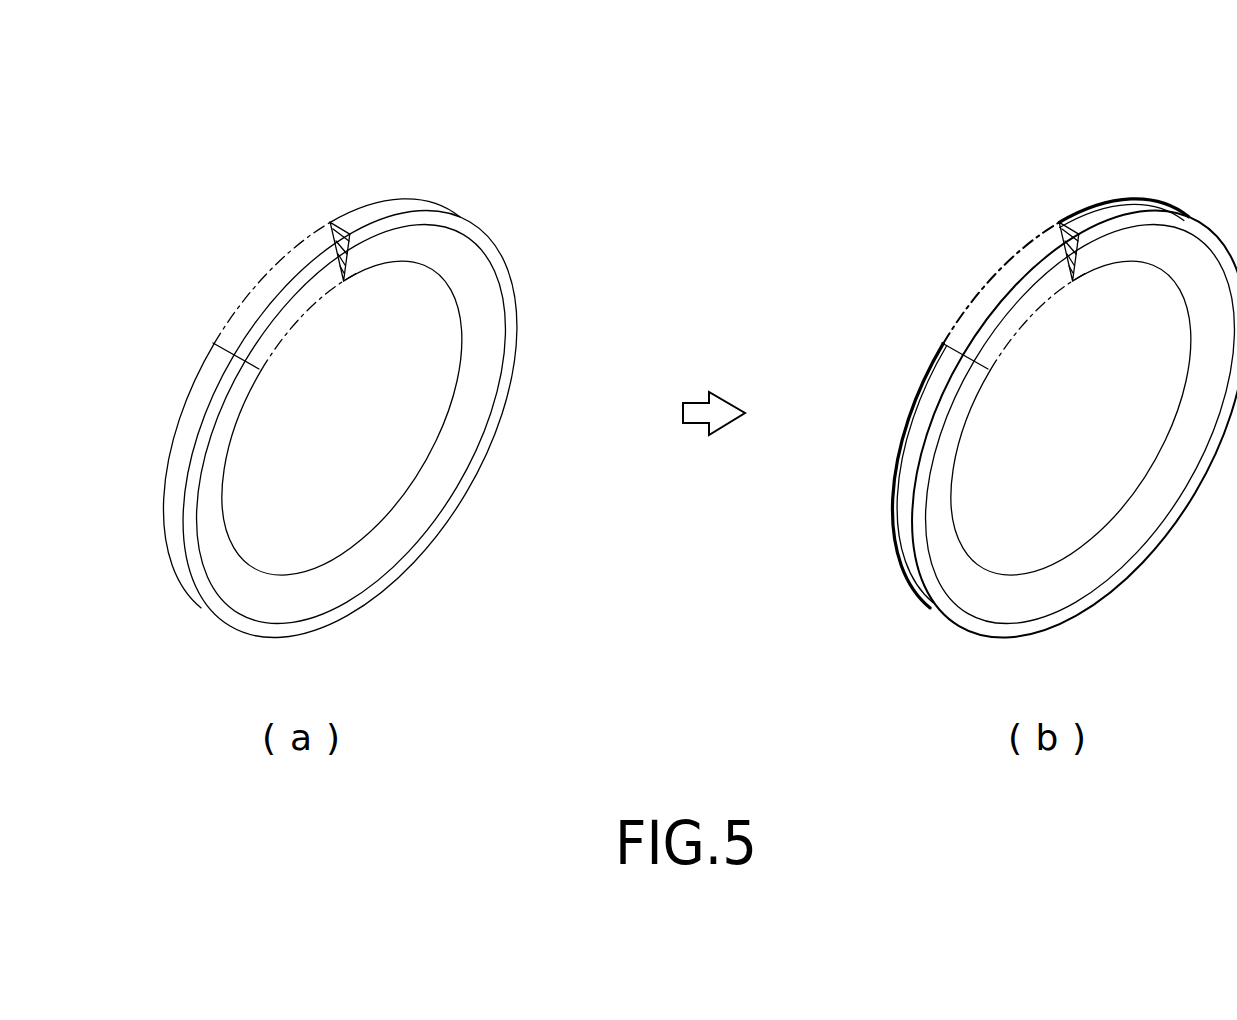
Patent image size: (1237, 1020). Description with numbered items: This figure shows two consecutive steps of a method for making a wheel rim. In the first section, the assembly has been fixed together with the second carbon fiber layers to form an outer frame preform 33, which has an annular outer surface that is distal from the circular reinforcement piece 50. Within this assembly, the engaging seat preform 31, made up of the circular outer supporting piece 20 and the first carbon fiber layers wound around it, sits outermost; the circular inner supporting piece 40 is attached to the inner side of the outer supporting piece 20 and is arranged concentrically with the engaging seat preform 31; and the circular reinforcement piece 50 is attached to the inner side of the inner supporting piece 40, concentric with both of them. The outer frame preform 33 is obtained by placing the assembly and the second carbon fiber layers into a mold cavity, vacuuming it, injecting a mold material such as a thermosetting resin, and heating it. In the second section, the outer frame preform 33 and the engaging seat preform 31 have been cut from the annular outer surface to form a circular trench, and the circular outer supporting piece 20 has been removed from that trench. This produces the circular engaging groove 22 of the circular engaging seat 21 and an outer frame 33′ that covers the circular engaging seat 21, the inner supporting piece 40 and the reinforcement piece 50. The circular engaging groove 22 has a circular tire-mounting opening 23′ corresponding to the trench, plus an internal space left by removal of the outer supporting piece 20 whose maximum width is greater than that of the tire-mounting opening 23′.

The circular outer supporting piece 20 is at (328, 221).
The circular engaging seat 21 is at (1142, 202).
The circular engaging groove 22 is at (1082, 220).
The circular tire-mounting opening 23′ is at (1110, 200).
The engaging seat preform 31 is at (333, 220).
The outer frame preform 33 is at (372, 213).
The outer frame 33′ is at (1037, 233).
The circular inner supporting piece 40 is at (322, 252).
The circular reinforcement piece 50 is at (343, 284).